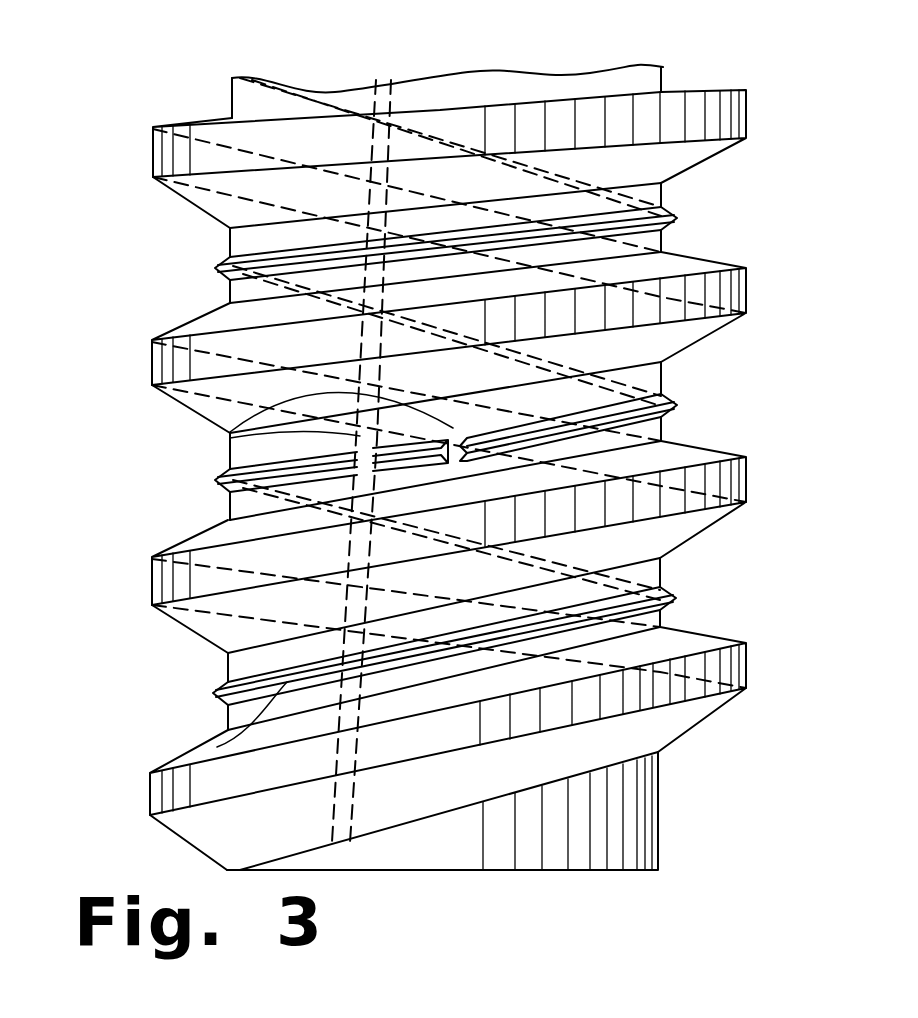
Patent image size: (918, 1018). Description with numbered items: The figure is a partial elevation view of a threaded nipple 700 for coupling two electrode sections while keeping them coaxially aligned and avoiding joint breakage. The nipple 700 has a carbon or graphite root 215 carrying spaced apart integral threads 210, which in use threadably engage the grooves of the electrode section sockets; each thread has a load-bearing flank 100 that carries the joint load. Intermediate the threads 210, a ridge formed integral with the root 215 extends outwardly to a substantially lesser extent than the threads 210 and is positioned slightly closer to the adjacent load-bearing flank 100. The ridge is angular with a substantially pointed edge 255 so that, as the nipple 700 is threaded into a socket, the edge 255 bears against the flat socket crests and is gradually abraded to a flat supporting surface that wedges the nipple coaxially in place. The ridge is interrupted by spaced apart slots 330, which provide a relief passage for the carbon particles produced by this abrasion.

The threaded nipple 700 is at (92, 358).
The load-bearing flank 100 is at (182, 198).
The threads 210 is at (120, 598).
The root 215 is at (230, 240).
The pointed edge 255 is at (425, 130).
The slots 330 is at (230, 438).